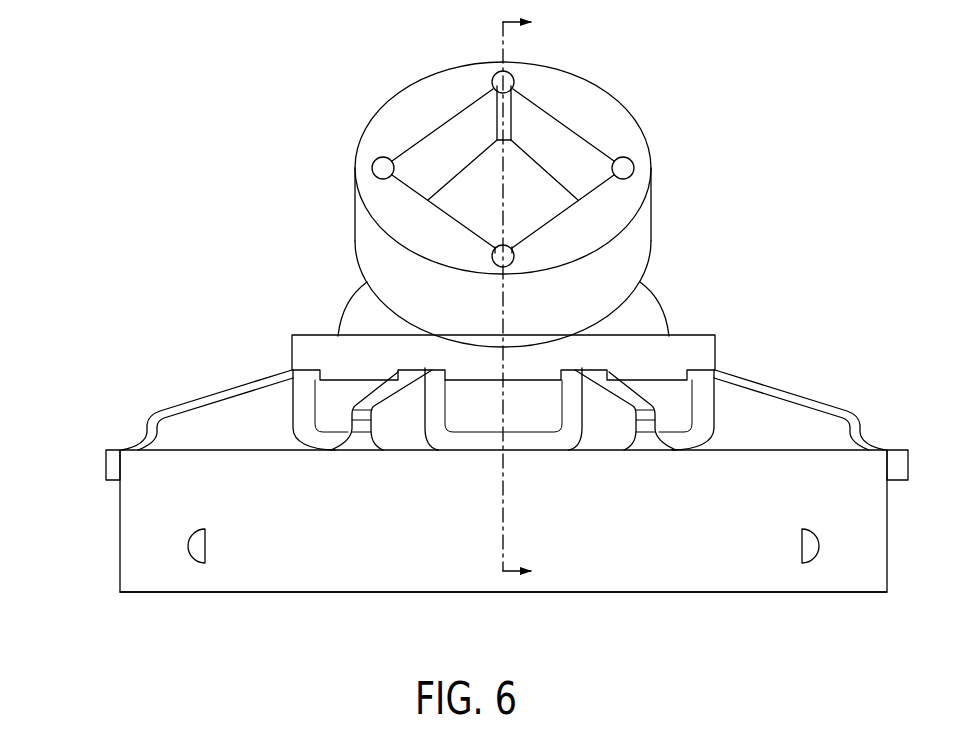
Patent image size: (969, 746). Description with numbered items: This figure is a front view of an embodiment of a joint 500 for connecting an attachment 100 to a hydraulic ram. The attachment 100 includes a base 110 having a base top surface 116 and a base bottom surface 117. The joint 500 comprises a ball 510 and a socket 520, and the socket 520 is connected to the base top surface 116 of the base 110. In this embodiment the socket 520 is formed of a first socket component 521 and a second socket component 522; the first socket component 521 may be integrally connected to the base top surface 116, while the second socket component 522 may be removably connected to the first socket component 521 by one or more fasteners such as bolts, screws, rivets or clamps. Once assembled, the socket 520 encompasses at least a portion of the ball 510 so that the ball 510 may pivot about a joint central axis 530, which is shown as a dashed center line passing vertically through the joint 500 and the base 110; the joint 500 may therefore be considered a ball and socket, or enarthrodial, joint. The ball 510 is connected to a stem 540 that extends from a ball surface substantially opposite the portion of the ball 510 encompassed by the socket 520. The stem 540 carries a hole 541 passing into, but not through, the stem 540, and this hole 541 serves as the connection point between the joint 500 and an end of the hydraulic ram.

The attachment 100 is at (108, 494).
The base 110 is at (138, 542).
The base top surface 116 is at (118, 447).
The base bottom surface 117 is at (258, 594).
The joint 500 is at (536, 243).
The ball 510 is at (366, 317).
The socket 520 is at (548, 362).
The first socket component 521 is at (676, 405).
The second socket component 522 is at (686, 347).
The joint central axis 530 is at (496, 45).
The stem 540 is at (381, 247).
The hole 541 is at (558, 148).